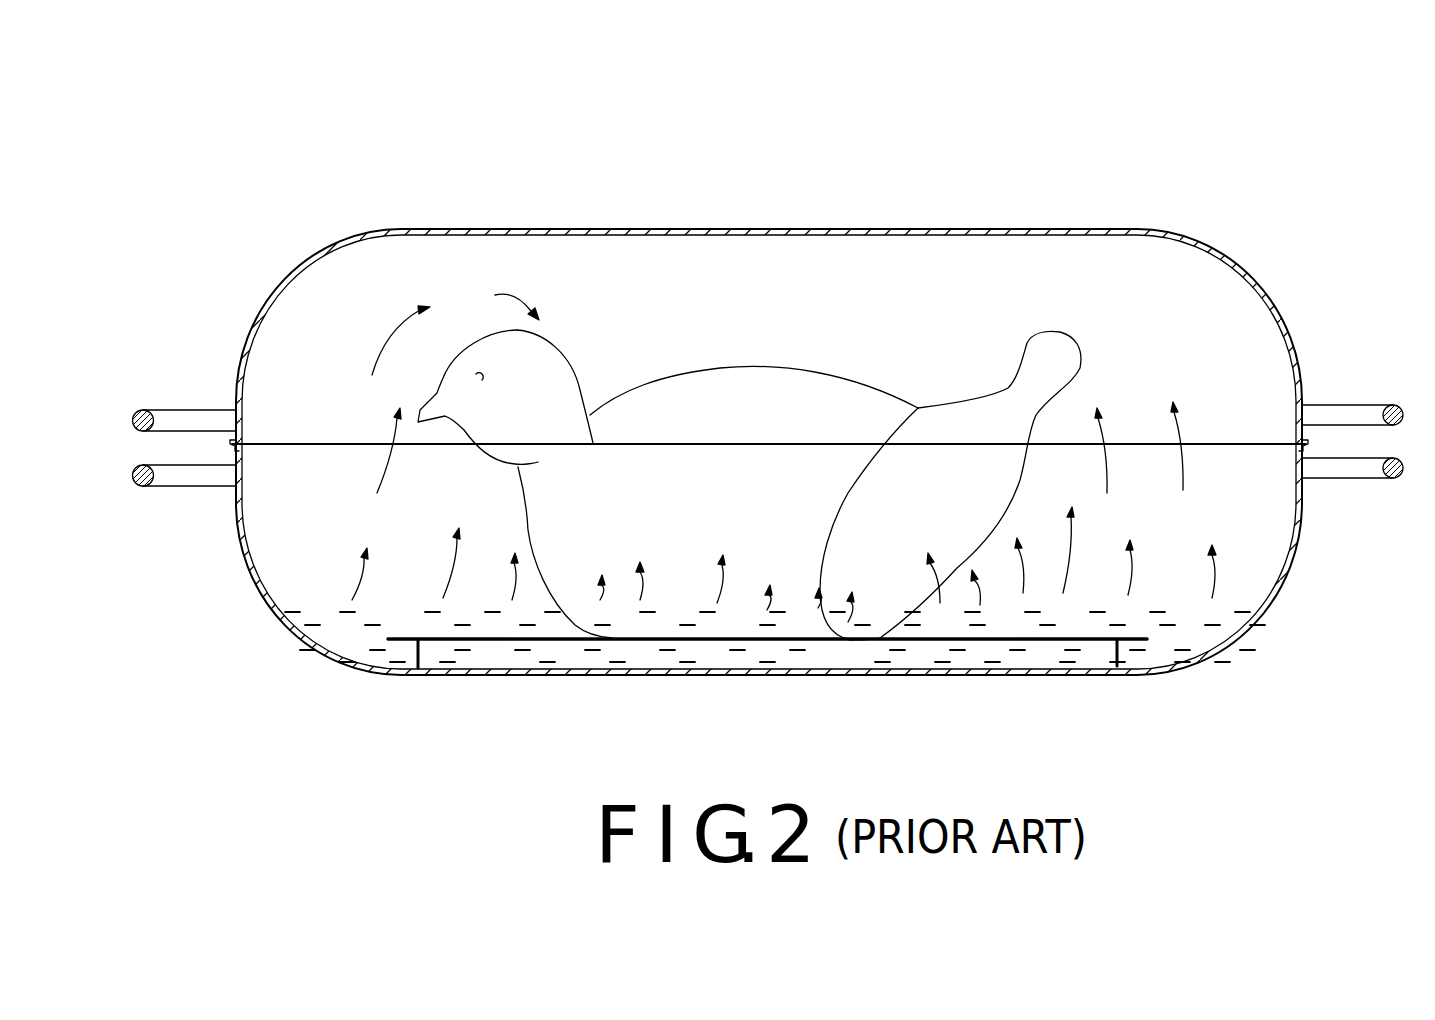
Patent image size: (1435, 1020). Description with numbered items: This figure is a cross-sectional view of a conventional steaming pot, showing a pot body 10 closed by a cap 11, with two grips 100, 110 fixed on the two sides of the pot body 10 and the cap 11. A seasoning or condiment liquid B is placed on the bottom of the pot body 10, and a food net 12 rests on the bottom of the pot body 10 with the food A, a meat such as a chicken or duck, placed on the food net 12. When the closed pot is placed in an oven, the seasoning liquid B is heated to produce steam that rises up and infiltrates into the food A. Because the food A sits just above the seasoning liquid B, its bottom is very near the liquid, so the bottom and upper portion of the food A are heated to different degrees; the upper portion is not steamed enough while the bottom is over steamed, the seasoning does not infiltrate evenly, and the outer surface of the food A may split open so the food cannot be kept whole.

The pot body 10 is at (345, 672).
The cap 11 is at (815, 228).
The food net 12 is at (498, 643).
The grip 100 is at (188, 478).
The grip 110 is at (188, 413).
The food A is at (708, 400).
The seasoning or condiment liquid B is at (885, 645).